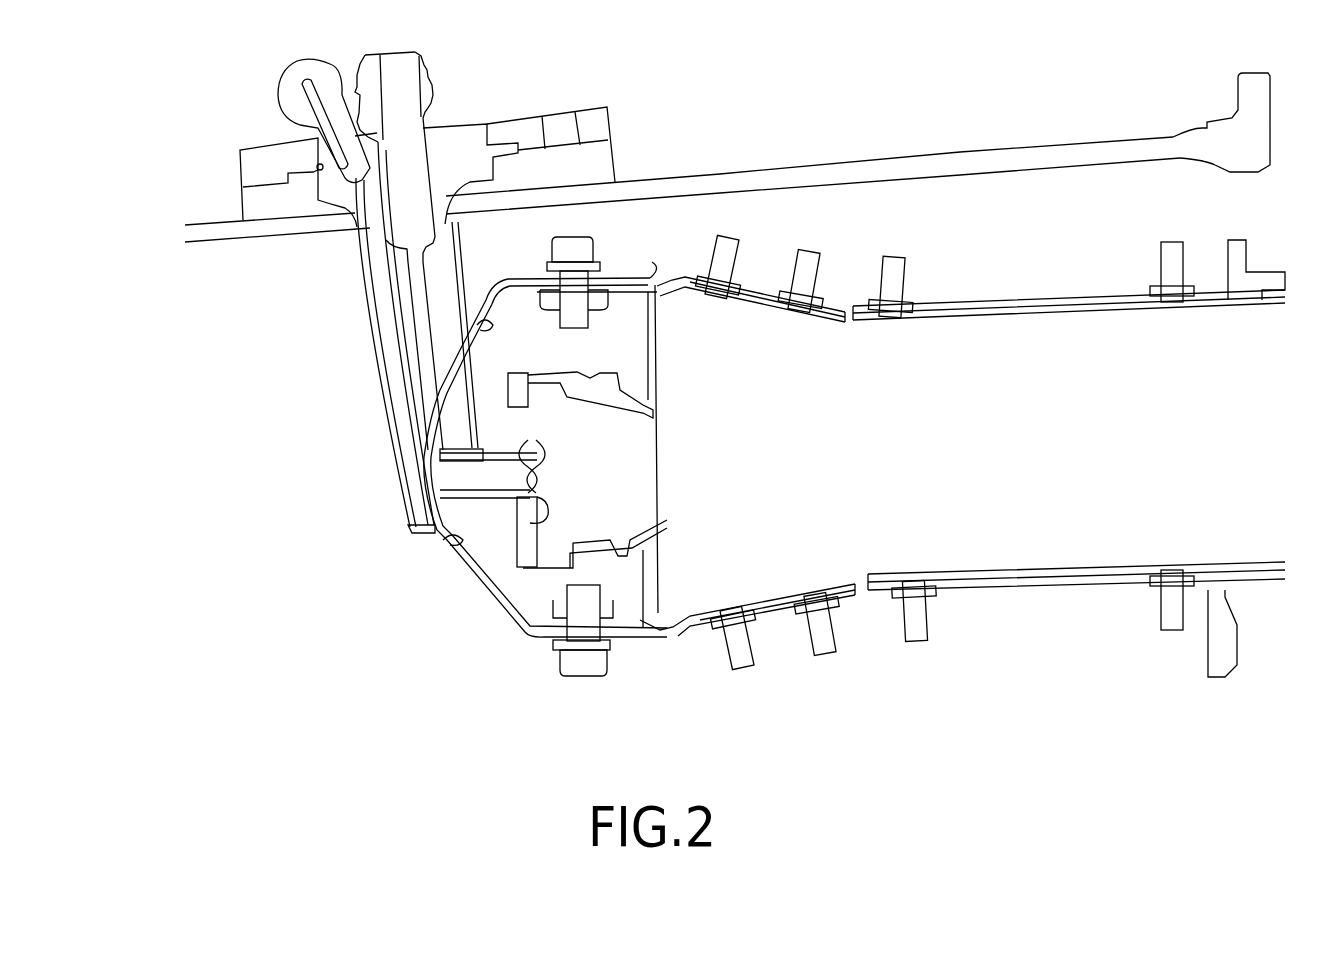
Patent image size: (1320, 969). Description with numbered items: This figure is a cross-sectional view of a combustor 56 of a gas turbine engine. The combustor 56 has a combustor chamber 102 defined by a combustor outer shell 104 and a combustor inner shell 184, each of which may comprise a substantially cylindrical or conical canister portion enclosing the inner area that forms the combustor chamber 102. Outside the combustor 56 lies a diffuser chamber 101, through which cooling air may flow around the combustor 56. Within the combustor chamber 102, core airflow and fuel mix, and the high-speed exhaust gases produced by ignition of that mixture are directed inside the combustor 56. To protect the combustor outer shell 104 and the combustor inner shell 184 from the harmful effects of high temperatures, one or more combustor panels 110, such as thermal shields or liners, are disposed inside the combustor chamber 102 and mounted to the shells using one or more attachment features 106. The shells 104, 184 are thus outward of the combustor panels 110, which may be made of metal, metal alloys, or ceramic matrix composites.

The combustor 56 is at (1101, 182).
The diffuser chamber 101 is at (457, 723).
The combustor chamber 102 is at (1094, 448).
The combustor outer shell 104 is at (1052, 297).
The attachment feature 106 is at (742, 278).
The combustor panel 110 is at (728, 308).
The combustor inner shell 184 is at (1037, 592).